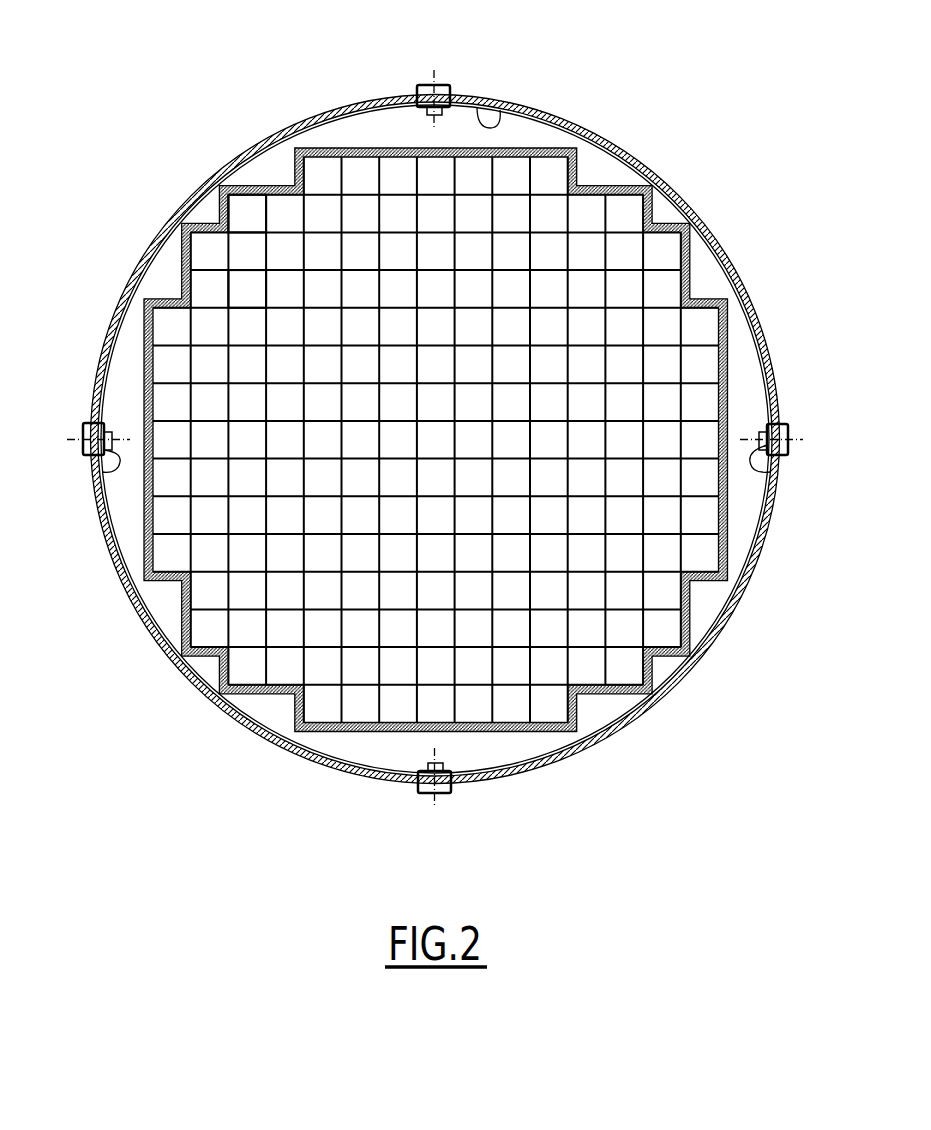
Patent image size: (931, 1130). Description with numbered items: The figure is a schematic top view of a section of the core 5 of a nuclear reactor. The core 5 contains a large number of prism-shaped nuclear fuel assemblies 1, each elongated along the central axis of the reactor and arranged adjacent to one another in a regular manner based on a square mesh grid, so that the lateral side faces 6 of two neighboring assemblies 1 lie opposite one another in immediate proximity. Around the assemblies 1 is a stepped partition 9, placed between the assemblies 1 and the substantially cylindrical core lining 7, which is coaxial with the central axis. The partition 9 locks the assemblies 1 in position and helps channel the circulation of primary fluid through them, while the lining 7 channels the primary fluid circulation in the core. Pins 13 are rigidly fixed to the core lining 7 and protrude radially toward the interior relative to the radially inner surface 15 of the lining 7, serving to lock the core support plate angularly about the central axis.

The nuclear fuel assembly 1 is at (243, 253).
The core 5 is at (683, 158).
The lateral side face 6 is at (250, 272).
The core lining 7 is at (315, 118).
The partition 9 is at (145, 362).
The pin 13 is at (393, 100).
The radially inner surface 15 is at (498, 112).